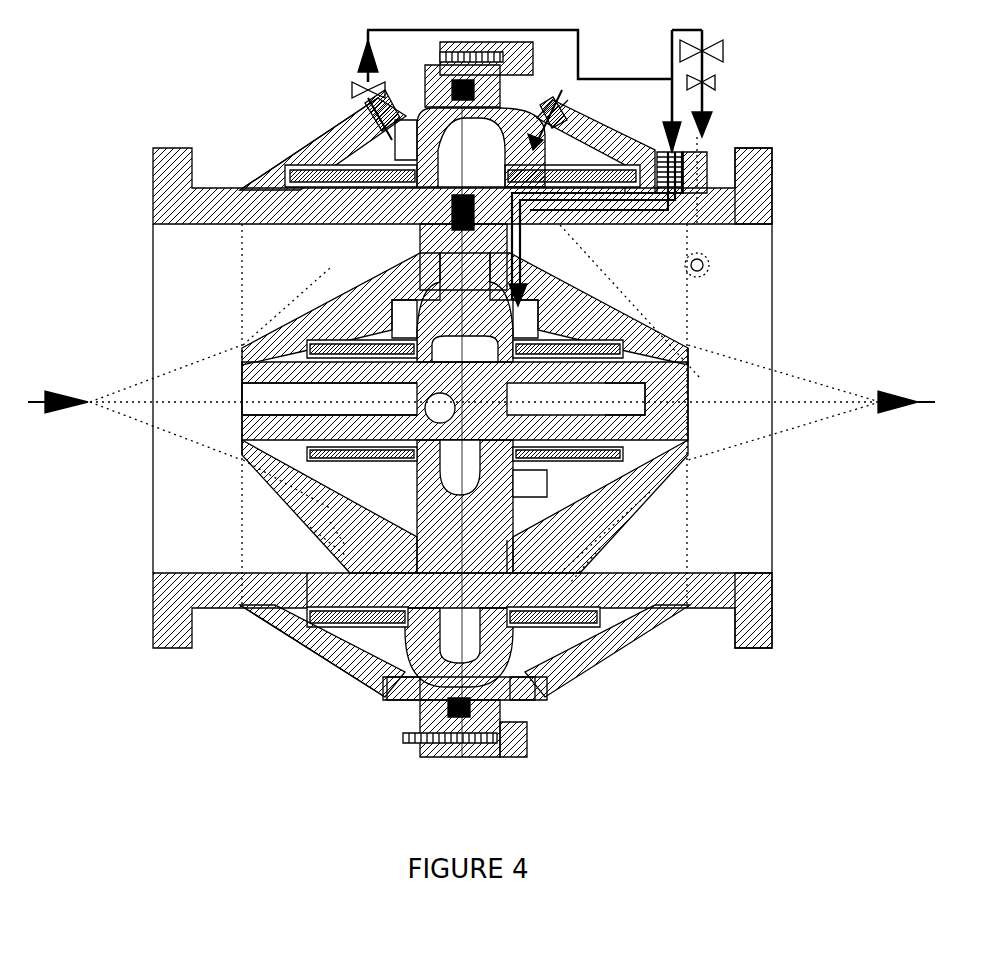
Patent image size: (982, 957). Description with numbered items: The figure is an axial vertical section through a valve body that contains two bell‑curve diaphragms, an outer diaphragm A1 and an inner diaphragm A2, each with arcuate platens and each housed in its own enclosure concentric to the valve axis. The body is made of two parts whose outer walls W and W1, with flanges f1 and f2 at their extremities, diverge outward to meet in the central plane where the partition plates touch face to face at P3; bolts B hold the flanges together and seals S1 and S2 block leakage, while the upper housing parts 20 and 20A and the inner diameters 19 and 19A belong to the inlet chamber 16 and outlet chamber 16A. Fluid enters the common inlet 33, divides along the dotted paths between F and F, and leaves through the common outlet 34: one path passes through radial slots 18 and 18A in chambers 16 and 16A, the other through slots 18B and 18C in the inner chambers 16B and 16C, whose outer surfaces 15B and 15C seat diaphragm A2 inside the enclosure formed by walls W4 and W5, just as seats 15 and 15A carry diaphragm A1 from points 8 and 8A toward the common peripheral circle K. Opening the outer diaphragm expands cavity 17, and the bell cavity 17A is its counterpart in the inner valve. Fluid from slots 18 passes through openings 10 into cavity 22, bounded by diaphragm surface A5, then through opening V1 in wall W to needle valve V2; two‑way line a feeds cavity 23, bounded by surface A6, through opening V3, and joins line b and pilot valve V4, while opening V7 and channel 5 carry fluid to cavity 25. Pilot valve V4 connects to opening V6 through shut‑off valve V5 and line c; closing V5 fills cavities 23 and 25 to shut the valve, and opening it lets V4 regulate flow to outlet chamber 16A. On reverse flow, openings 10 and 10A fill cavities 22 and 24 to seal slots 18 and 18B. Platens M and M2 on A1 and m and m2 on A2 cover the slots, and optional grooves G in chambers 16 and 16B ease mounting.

The upper housing flange 20 is at (172, 148).
The upper housing flange 20A is at (772, 152).
The inlet cylindrical chamber 16 is at (228, 572).
The inner diameter 19A is at (670, 572).
The cylindrical inlet 33 is at (152, 290).
The outlet opening 34 is at (775, 337).
The inner diameter 19 is at (190, 226).
The cylindrical outlet chamber 16A is at (714, 226).
The arcuate platen M is at (315, 133).
The outer wall W is at (332, 130).
The outer surface of second diaphragm section A6 is at (590, 140).
The outer surface of first diaphragm section A5 is at (350, 165).
The seal S1 is at (424, 110).
The bolt B is at (532, 60).
The opening 10 is at (470, 147).
The opening V7 is at (704, 163).
The needle valve V2 is at (360, 72).
The opening V1 is at (357, 110).
The pilot valve V4 is at (718, 58).
The shut off valve V5 is at (718, 87).
The pipe line c is at (712, 77).
The line b is at (652, 99).
The two way line a is at (556, 93).
The opening V3 is at (572, 100).
The channel 5 is at (548, 262).
The wall W4 is at (355, 302).
The wall W5 is at (613, 318).
The opening 10A is at (455, 305).
The seat 15B is at (465, 337).
The point 8 is at (245, 187).
The radial slots 18B is at (329, 399).
The radial slots 18C is at (576, 399).
The partition plate contact P3 is at (416, 566).
The common peripheral circle K is at (395, 250).
The bell type circular cavity 17A is at (465, 468).
The outer wall W1 is at (613, 635).
The cavity 17 is at (462, 645).
The seal S2 is at (508, 570).
The flange f1 is at (420, 716).
The flange f2 is at (500, 708).
The cavity 22 is at (360, 640).
The arcuate platen M2 is at (387, 692).
The cavity 23 is at (590, 684).
The flow path marker F is at (63, 395).
The diaphragm A1 is at (300, 225).
The radial slots 18 is at (360, 225).
The cavity 24 is at (405, 265).
The cavity 25 is at (590, 320).
The opening V6 is at (695, 282).
The point 8A is at (655, 340).
The seat 15C is at (690, 398).
The cylindrical outlet chamber 16C is at (650, 412).
The arcuate platen m is at (243, 411).
The cylindrical inlet chamber 16B is at (250, 397).
The groove G is at (242, 452).
The diaphragm A2 is at (320, 473).
The arcuate platen m2 is at (330, 523).
The seat 15 is at (316, 532).
The seat 15A is at (668, 573).
The radial slots 18A is at (565, 588).